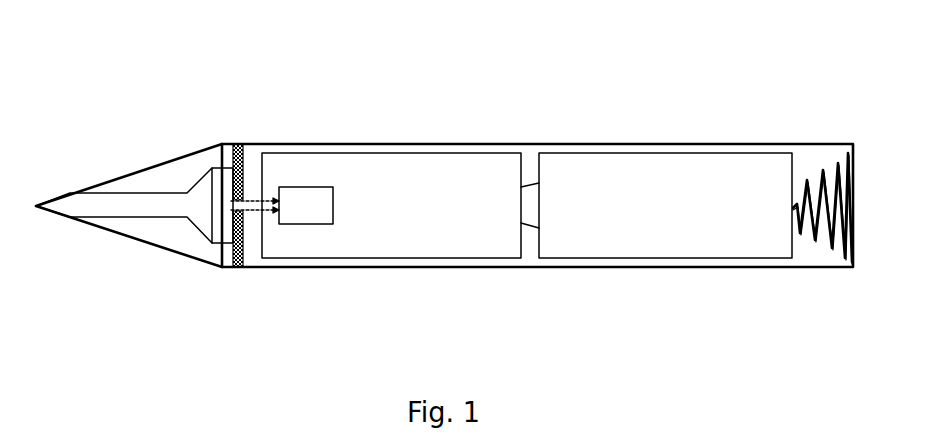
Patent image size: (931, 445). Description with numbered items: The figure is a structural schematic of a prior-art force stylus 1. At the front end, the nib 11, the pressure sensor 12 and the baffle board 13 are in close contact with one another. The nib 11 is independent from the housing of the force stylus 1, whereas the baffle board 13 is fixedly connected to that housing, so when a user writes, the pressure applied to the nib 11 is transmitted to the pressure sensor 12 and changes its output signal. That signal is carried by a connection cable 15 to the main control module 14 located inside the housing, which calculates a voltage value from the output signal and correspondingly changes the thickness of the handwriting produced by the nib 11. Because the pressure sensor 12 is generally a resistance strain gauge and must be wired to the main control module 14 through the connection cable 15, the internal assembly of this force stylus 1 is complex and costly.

The force stylus 1 is at (463, 144).
The nib 11 is at (73, 213).
The pressure sensor 12 is at (225, 238).
The baffle board 13 is at (242, 144).
The main control module 14 is at (352, 173).
The connection cable 15 is at (255, 215).